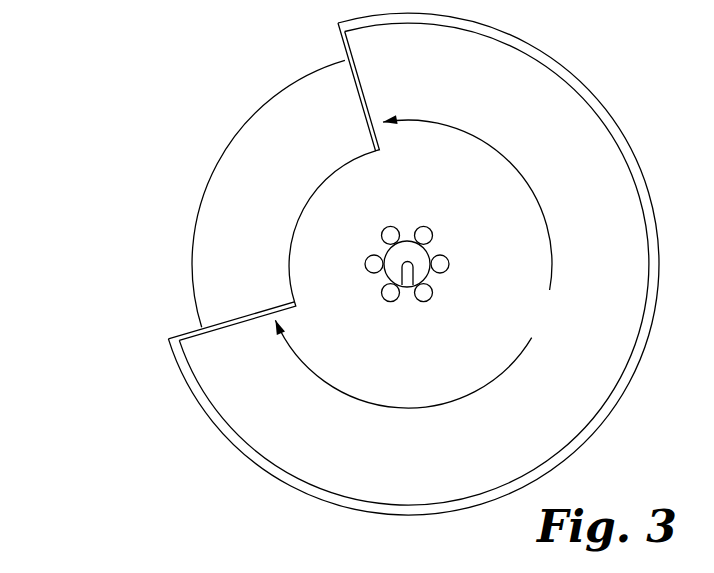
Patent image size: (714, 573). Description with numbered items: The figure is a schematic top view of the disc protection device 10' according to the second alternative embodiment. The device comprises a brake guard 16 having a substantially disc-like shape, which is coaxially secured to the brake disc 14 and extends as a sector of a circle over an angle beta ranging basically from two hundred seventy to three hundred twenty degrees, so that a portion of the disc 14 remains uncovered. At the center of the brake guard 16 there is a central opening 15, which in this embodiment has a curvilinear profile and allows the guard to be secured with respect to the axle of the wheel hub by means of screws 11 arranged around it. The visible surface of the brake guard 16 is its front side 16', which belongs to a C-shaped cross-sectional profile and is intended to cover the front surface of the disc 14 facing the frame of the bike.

The protection device 10' is at (410, 258).
The screws 11 is at (427, 237).
The disc 14 is at (228, 212).
The central opening 15 is at (412, 272).
The brake guard 16 is at (413, 258).
The front side 16' is at (489, 261).